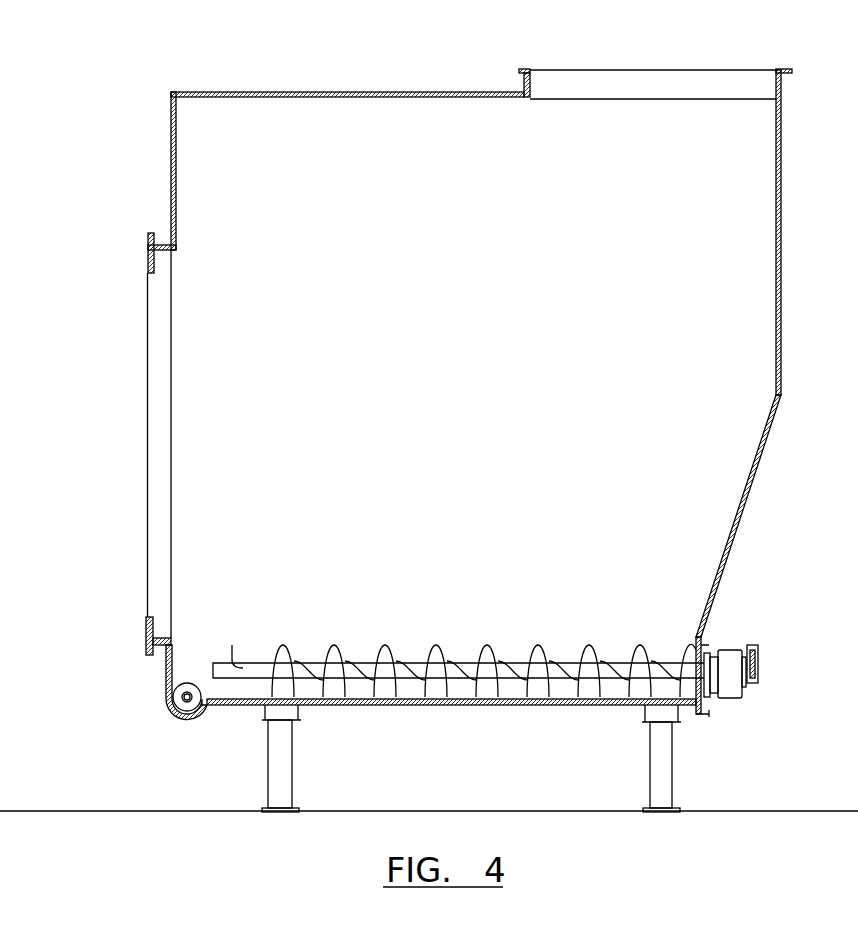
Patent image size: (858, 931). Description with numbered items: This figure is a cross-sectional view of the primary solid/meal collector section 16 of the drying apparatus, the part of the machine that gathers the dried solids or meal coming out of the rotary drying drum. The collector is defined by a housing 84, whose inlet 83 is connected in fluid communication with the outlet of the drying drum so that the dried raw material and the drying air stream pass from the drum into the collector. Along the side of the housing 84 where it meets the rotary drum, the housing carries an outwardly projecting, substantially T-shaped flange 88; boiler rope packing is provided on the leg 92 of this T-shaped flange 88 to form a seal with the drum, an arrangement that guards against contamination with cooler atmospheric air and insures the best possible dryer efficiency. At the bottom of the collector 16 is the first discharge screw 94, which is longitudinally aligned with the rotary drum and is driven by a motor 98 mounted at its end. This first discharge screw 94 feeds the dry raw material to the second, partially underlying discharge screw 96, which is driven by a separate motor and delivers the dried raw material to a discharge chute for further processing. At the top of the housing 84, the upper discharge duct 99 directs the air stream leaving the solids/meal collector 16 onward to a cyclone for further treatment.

The primary solid/meal collector section 16 is at (329, 79).
The upper discharge duct 99 is at (709, 82).
The collector housing 84 is at (176, 142).
The inlet 83 is at (165, 382).
The T-shaped flange 88 is at (147, 628).
The leg 92 is at (155, 655).
The second discharge screw 96 is at (181, 704).
The first discharge screw 94 is at (508, 687).
The motor 98 is at (722, 658).